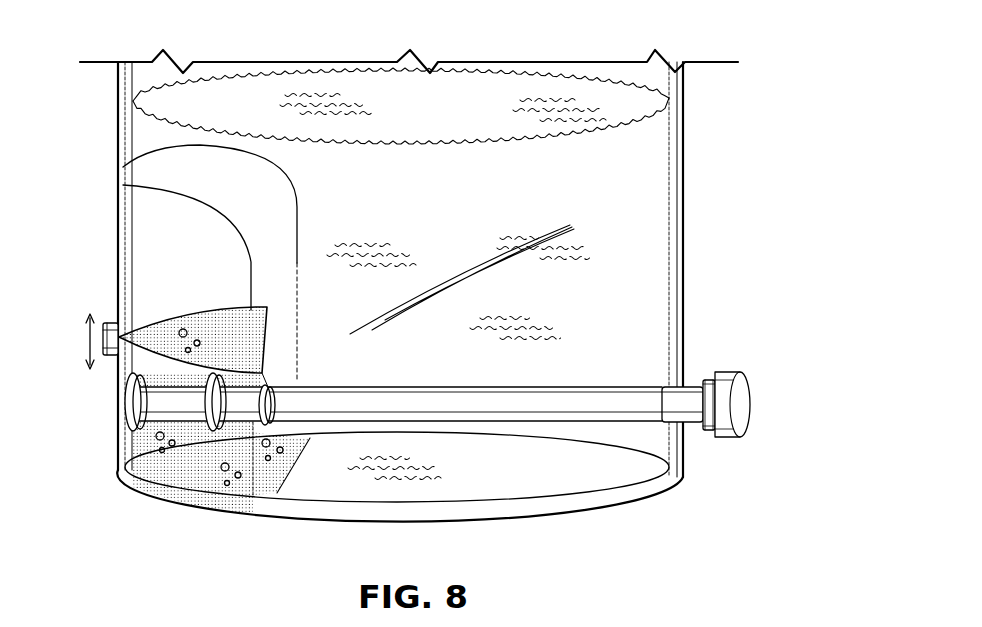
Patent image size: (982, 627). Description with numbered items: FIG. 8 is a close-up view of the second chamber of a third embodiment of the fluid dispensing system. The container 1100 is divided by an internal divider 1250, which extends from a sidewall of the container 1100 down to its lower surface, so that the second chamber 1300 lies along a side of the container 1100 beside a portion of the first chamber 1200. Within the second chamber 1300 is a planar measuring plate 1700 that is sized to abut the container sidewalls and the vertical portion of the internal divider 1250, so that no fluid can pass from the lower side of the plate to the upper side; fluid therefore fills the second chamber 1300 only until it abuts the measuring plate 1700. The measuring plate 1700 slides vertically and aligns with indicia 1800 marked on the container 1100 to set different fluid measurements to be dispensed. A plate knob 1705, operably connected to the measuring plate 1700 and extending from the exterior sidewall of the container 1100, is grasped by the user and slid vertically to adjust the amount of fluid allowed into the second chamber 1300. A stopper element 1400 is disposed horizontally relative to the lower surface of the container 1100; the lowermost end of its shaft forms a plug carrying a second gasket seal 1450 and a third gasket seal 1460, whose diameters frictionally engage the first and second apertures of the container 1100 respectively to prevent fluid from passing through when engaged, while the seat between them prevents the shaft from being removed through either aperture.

The container 1100 is at (683, 153).
The first chamber 1200 is at (669, 215).
The second chamber 1300 is at (131, 212).
The internal divider 1250 is at (157, 163).
The indicia 1800 is at (295, 262).
The measuring plate 1700 is at (157, 330).
The plate knob 1705 is at (113, 322).
The stopper element 1400 is at (727, 372).
The second gasket seal 1450 is at (213, 432).
The third gasket seal 1460 is at (118, 430).